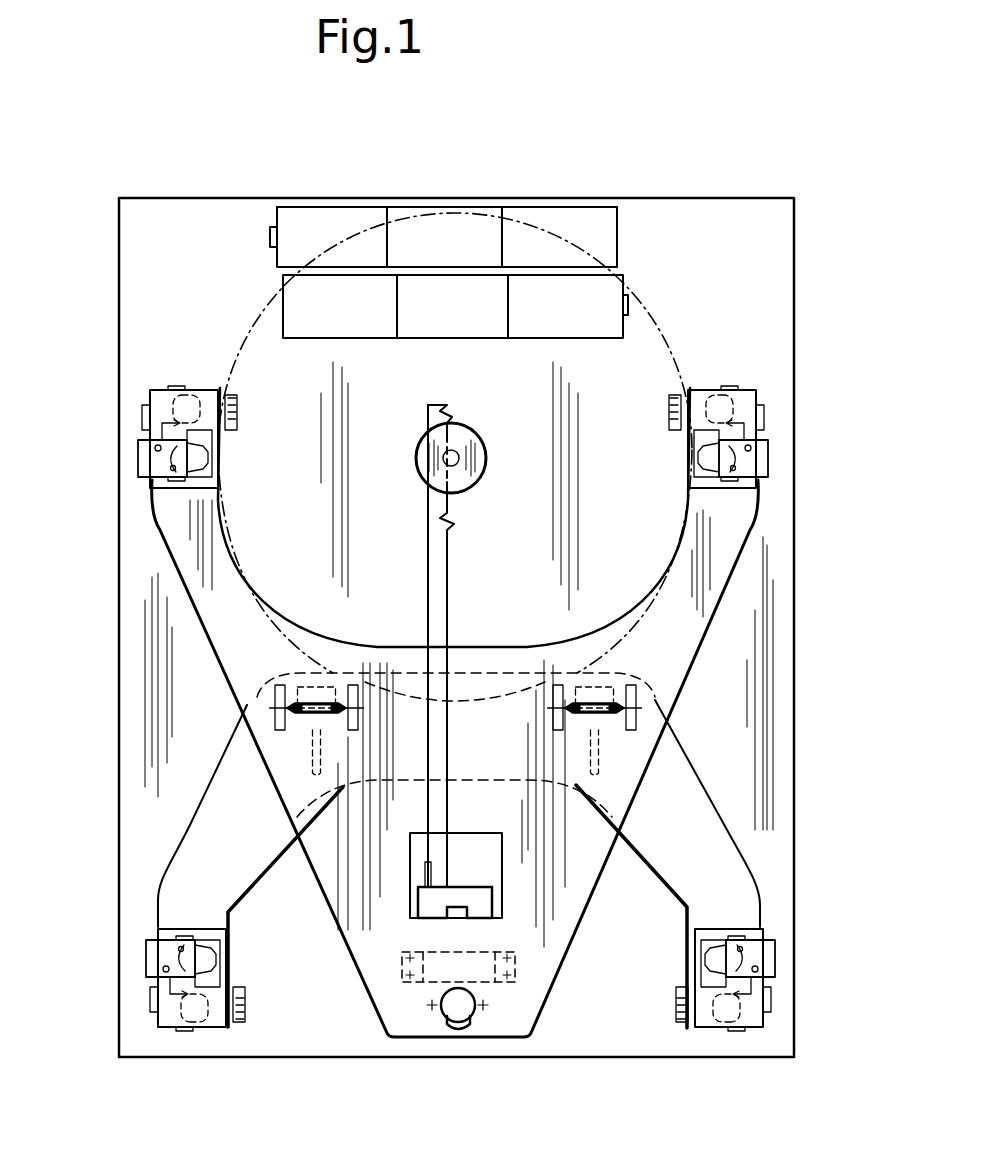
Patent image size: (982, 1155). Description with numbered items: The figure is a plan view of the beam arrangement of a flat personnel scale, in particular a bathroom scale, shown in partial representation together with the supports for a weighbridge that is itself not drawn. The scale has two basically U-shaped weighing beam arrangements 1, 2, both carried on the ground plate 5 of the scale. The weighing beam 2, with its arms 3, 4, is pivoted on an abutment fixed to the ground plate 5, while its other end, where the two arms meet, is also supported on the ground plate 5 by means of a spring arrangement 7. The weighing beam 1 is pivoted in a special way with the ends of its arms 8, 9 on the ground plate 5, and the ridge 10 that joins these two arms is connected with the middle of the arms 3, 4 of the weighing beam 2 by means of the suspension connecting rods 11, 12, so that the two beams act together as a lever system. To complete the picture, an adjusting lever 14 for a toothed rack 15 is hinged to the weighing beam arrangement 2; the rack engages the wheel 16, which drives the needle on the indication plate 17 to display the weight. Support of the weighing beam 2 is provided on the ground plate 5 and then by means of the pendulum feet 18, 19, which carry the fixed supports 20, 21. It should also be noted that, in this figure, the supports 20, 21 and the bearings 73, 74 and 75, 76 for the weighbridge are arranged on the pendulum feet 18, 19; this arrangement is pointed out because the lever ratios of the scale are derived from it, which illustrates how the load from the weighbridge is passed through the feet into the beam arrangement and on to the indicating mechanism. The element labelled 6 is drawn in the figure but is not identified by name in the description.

The weighing beam arrangement 1 is at (663, 772).
The weighing beam arrangement 2 is at (665, 640).
The arm 3 is at (200, 567).
The arm 4 is at (707, 573).
The ground plate 5 is at (768, 237).
The base section 6 is at (538, 948).
The spring arrangement 7 is at (458, 1017).
The arm 8 is at (213, 830).
The arm 9 is at (695, 828).
The ridge 10 is at (507, 748).
The suspension connecting rod 11 is at (273, 697).
The suspension connecting rod 12 is at (613, 700).
The adjusting lever 14 is at (418, 900).
The toothed rack 15 is at (438, 542).
The wheel 16 is at (461, 437).
The indication plate 17 is at (660, 357).
The pendulum foot 18 is at (150, 993).
The pendulum foot 19 is at (767, 1002).
The fixed support 20 is at (145, 413).
The fixed support 21 is at (767, 418).
The bearing 73 is at (155, 955).
The bearing 74 is at (760, 948).
The bearing 75 is at (150, 462).
The bearing 76 is at (758, 455).